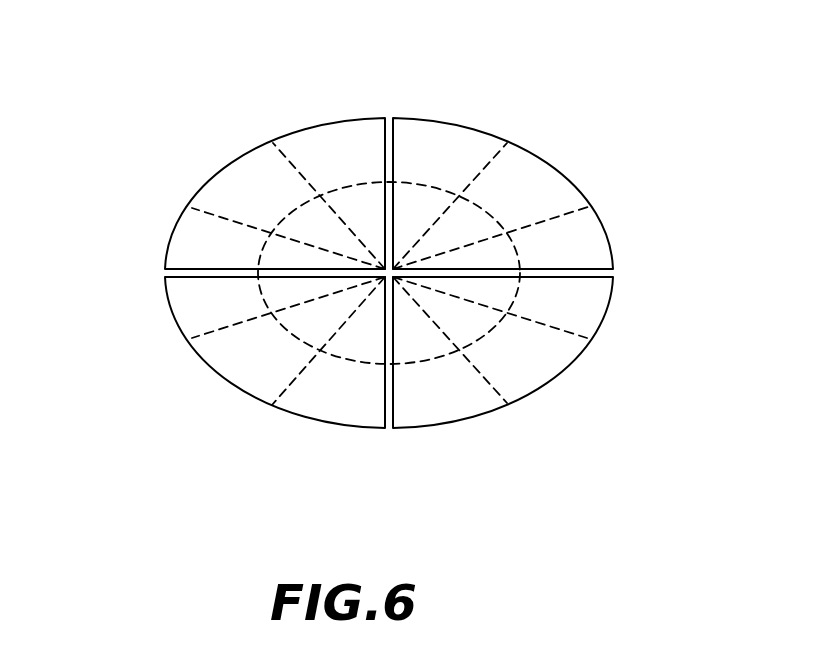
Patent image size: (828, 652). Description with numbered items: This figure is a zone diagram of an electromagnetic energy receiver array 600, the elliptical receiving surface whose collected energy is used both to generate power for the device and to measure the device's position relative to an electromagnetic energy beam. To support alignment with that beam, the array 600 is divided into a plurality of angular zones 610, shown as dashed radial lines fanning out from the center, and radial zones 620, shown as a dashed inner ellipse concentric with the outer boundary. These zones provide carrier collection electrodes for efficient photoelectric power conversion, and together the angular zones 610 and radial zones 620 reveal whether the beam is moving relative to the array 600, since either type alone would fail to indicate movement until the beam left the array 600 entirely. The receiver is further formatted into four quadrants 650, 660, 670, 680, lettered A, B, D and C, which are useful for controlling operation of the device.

The electromagnetic energy receiver array 600 is at (405, 273).
The angular zones 610 is at (437, 142).
The radial zones 620 is at (435, 405).
The quadrant 650 is at (165, 168).
The quadrant 660 is at (567, 148).
The quadrant 670 is at (593, 388).
The quadrant 680 is at (188, 388).